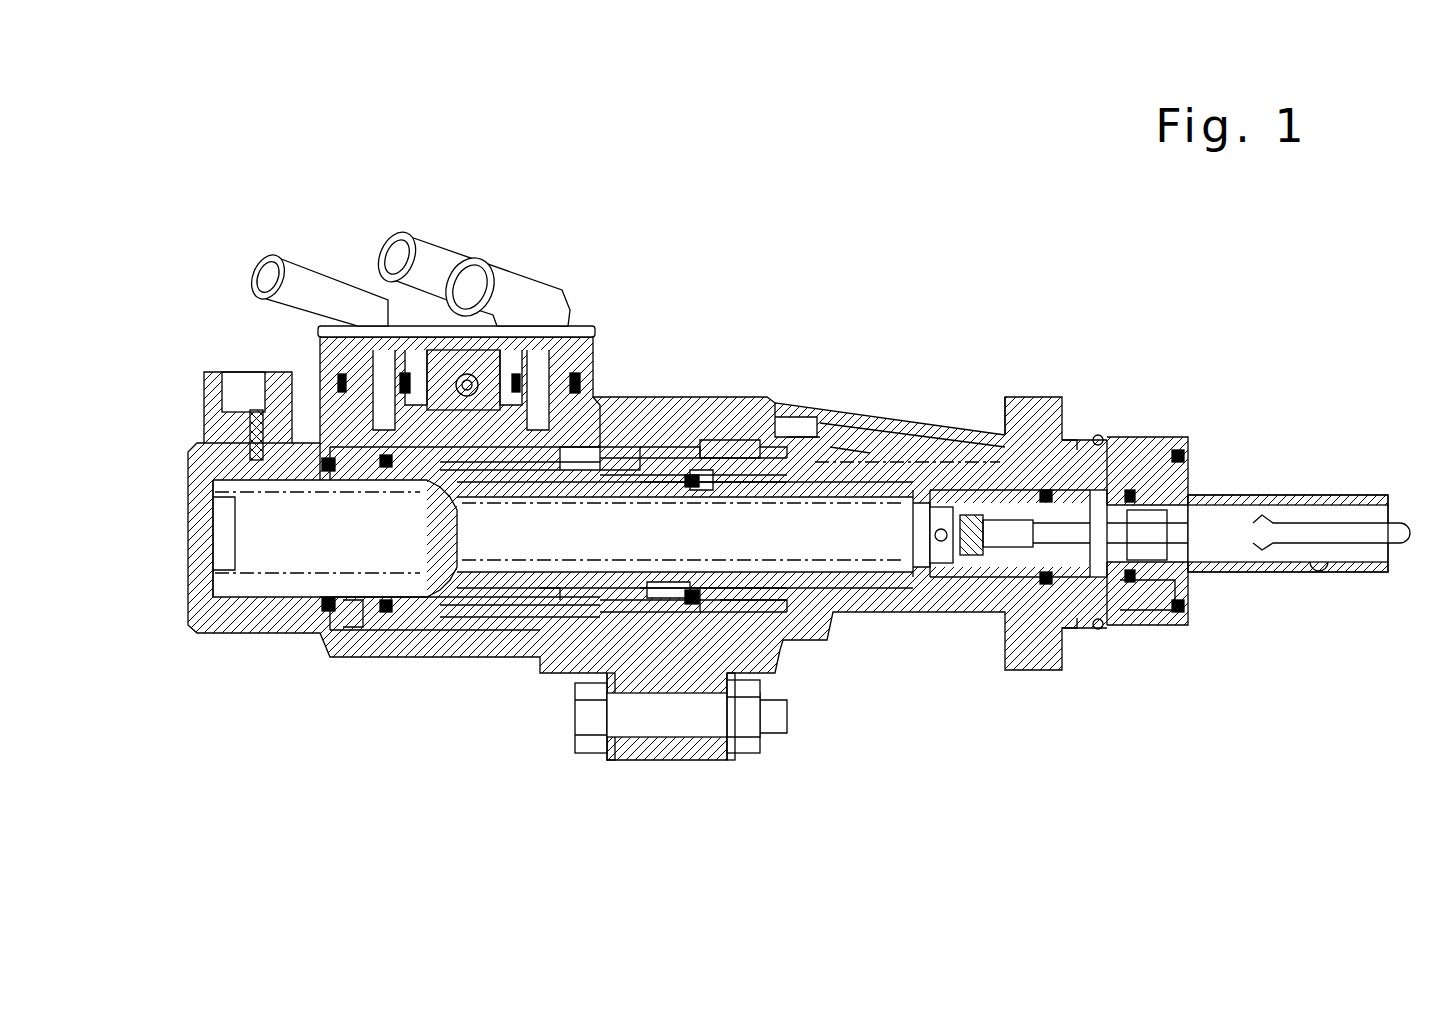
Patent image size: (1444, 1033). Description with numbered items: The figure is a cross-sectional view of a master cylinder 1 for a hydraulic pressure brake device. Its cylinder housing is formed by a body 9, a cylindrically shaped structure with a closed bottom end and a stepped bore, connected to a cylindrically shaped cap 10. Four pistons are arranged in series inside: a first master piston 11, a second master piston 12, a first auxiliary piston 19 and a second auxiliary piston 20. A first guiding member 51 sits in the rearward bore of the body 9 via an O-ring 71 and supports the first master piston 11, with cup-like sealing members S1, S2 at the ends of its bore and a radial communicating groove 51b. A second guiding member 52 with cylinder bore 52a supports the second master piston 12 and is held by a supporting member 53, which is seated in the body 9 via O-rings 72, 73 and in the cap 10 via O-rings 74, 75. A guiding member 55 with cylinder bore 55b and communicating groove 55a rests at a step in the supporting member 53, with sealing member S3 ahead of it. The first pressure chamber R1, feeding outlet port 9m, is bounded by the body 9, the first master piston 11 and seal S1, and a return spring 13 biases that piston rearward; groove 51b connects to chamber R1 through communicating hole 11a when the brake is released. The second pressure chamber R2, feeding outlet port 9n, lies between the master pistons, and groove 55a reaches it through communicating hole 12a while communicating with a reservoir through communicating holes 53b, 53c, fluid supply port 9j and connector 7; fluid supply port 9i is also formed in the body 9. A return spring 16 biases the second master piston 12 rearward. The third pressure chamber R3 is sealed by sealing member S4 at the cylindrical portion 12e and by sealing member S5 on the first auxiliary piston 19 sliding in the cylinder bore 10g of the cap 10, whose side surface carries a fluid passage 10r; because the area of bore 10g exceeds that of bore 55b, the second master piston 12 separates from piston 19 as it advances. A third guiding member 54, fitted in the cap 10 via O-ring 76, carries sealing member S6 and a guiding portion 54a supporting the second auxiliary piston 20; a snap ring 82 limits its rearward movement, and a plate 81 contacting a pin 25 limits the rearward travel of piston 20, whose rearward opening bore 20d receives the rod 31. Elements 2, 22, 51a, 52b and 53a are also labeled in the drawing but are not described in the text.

The master cylinder 1 is at (852, 262).
The cylinder tube 2 is at (953, 437).
The connector 7 is at (570, 335).
The body 9 is at (273, 627).
The fluid supply port 9i is at (373, 357).
The fluid supply port 9j is at (603, 360).
The outlet port 9m is at (243, 387).
The outlet port 9n is at (440, 360).
The cap 10 is at (1023, 660).
The cylinder bore 10g is at (937, 590).
The fluid passage 10r is at (1073, 463).
The first master piston 11 is at (330, 490).
The communicating hole 11a is at (330, 497).
The second master piston 12 is at (917, 577).
The communicating hole 12a is at (640, 440).
The cylindrical portion 12e is at (930, 480).
The return spring 13 is at (232, 633).
The return spring 16 is at (887, 575).
The first auxiliary piston 19 is at (983, 563).
The second auxiliary piston 20 is at (1355, 530).
The rearward opening bore 20d is at (1328, 575).
The rod tube 22 is at (1240, 527).
The pin 25 is at (1113, 562).
The rod 31 is at (1395, 525).
The first guiding member 51 is at (312, 637).
The sleeve groove 51a is at (357, 643).
The communicating groove 51b is at (320, 433).
The second guiding member 52 is at (492, 622).
The cylinder bore 52a is at (613, 397).
The sleeve groove 52b is at (550, 575).
The supporting member 53 is at (637, 653).
The sleeve shoulder 53a is at (735, 617).
The communicating hole 53b is at (713, 443).
The communicating hole 53c is at (713, 440).
The third guiding member 54 is at (1133, 457).
The guiding portion 54a is at (1133, 605).
The guiding member 55 is at (760, 613).
The communicating groove 55a is at (673, 437).
The cylinder bore 55b is at (692, 585).
The O-ring 71 is at (403, 360).
The O-ring 72 is at (533, 360).
The O-ring 73 is at (590, 655).
The O-ring 74 is at (700, 650).
The O-ring 75 is at (760, 450).
The O-ring 76 is at (1160, 457).
The plate 81 is at (1120, 457).
The snap ring 82 is at (1170, 460).
The first pressure chamber R1 is at (205, 637).
The second pressure chamber R2 is at (813, 437).
The third pressure chamber R3 is at (853, 447).
The annular cup-like sealing member S1 is at (340, 622).
The annular cup-like sealing member S2 is at (420, 637).
The annular cup-like sealing member S3 is at (690, 600).
The annular cup-like sealing member S4 is at (760, 437).
The annular cup-like sealing member S5 is at (1030, 487).
The annular cup-like sealing member S6 is at (1147, 587).